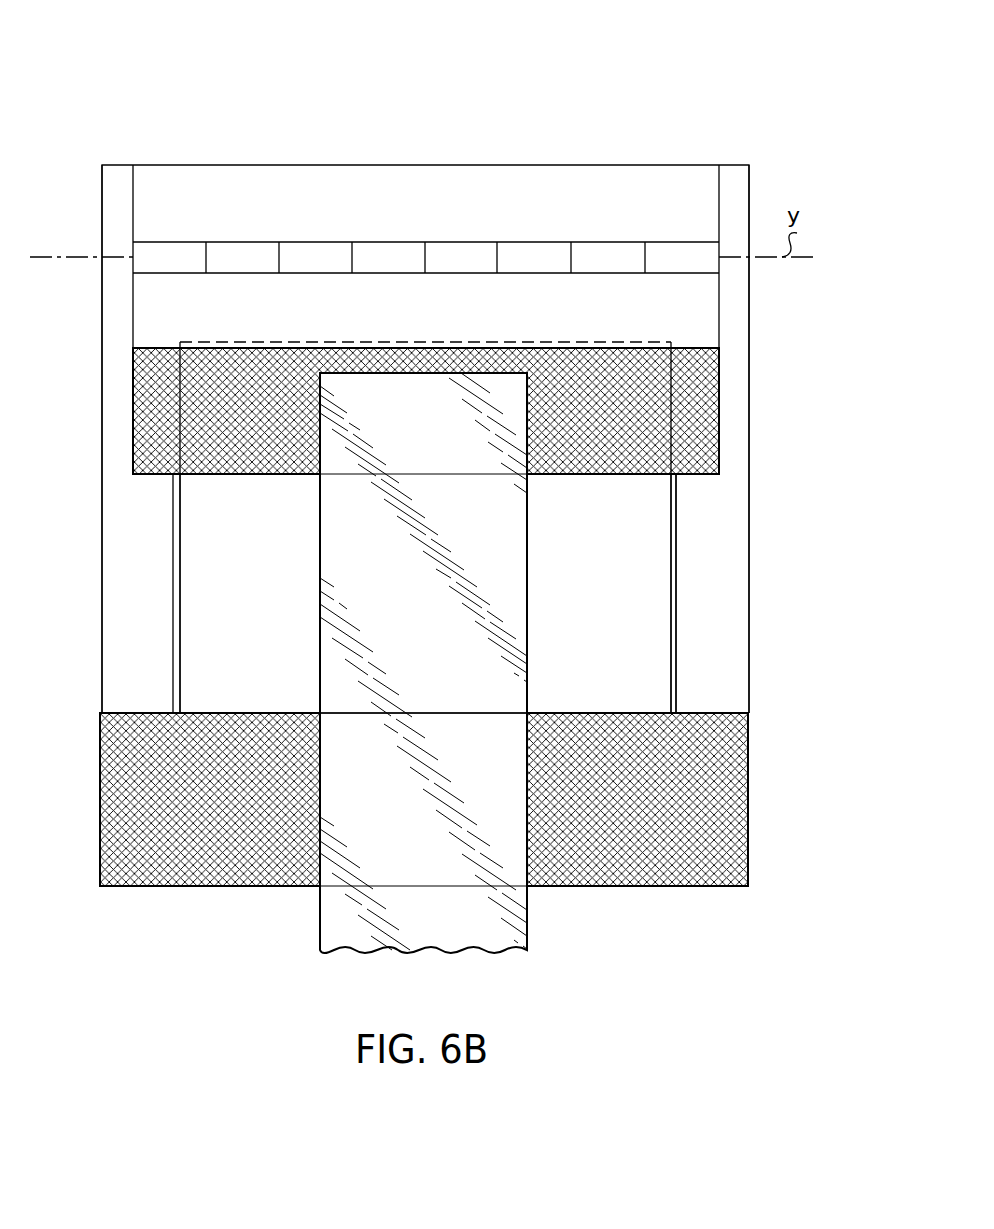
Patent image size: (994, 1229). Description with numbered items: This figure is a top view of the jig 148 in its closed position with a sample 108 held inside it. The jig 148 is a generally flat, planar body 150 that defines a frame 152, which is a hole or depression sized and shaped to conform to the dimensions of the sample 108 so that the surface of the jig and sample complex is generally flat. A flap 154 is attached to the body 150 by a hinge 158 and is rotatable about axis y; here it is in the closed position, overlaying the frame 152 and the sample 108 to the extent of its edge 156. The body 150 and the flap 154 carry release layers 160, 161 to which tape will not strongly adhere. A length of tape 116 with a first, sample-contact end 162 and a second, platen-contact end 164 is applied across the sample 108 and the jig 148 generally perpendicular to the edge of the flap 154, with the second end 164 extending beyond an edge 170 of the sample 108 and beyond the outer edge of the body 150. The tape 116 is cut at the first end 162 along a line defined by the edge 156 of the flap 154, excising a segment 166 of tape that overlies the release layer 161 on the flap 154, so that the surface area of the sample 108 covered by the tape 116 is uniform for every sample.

The jig 148 is at (759, 100).
The body 150 is at (117, 515).
The flap 154 is at (143, 305).
The hinge 158 is at (475, 250).
The segment 166 is at (443, 378).
The release layer 161 is at (713, 398).
The edge 156 is at (247, 476).
The sample 108 is at (657, 540).
The frame 152 is at (670, 620).
The release layer 160 is at (745, 783).
The edge 170 is at (600, 712).
The tape 116 is at (517, 622).
The first end 162 is at (517, 492).
The second end 164 is at (524, 915).